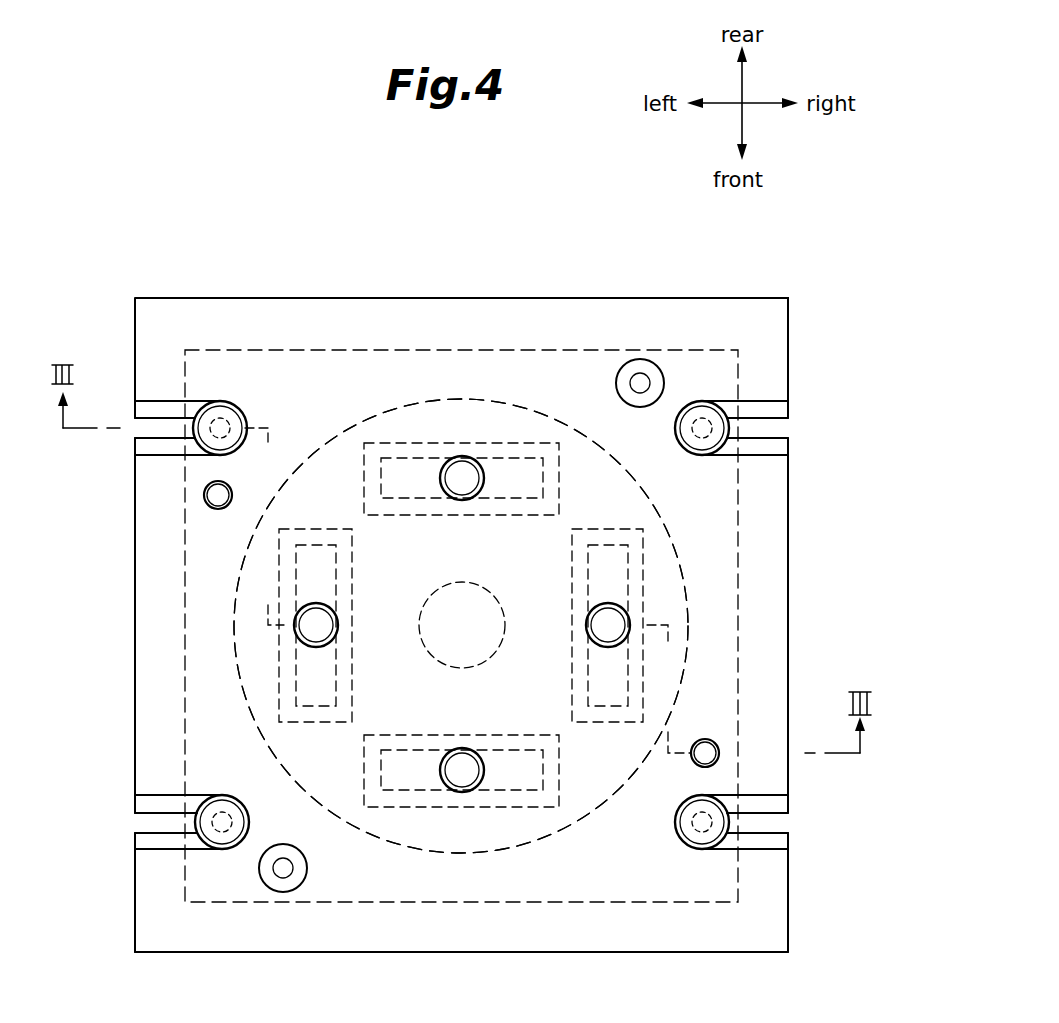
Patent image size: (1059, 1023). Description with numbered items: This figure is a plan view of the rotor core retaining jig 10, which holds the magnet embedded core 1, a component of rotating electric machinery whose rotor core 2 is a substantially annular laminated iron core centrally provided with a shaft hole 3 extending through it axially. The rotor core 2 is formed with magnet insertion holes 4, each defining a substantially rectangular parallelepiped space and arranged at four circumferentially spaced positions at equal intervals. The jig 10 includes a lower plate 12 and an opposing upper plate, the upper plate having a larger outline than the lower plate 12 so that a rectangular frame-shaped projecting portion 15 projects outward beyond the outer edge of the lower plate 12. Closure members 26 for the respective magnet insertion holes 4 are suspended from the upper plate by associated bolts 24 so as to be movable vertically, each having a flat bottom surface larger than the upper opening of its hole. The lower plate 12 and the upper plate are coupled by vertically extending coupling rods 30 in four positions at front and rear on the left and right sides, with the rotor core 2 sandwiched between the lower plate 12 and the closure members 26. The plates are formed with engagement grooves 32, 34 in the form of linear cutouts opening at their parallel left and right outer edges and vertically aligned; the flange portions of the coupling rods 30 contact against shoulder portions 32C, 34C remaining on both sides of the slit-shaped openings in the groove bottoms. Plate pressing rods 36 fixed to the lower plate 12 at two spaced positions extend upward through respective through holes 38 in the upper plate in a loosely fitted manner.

The magnet embedded core 1 is at (365, 842).
The rotor core 2 is at (645, 492).
The shaft hole 3 is at (420, 605).
The magnet insertion holes 4 is at (496, 460).
The rotor core retaining jig 10 is at (620, 280).
The lower plate 12 is at (738, 567).
The projecting portion 15 is at (515, 942).
The bolts 24 is at (605, 622).
The closure members 26 is at (418, 443).
The coupling rods 30 is at (246, 432).
The engagement grooves 32 is at (150, 428).
The shoulder portions 32C is at (147, 843).
The engagement grooves 34 is at (212, 432).
The shoulder portions 34C is at (195, 800).
The plate pressing rods 36 is at (224, 490).
The through holes 38 is at (214, 505).